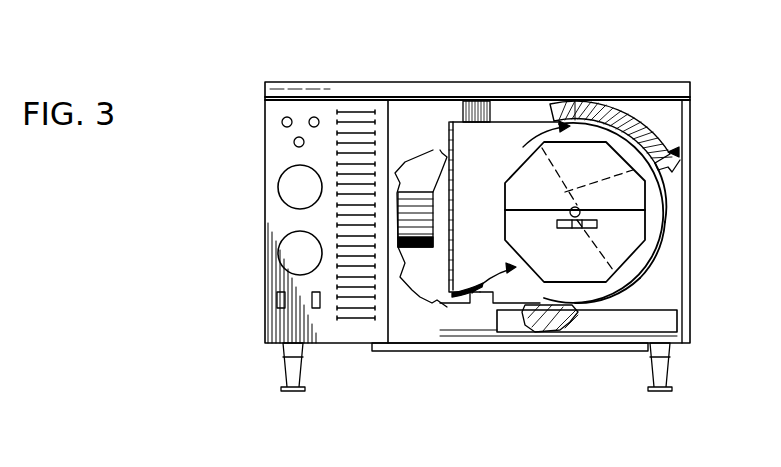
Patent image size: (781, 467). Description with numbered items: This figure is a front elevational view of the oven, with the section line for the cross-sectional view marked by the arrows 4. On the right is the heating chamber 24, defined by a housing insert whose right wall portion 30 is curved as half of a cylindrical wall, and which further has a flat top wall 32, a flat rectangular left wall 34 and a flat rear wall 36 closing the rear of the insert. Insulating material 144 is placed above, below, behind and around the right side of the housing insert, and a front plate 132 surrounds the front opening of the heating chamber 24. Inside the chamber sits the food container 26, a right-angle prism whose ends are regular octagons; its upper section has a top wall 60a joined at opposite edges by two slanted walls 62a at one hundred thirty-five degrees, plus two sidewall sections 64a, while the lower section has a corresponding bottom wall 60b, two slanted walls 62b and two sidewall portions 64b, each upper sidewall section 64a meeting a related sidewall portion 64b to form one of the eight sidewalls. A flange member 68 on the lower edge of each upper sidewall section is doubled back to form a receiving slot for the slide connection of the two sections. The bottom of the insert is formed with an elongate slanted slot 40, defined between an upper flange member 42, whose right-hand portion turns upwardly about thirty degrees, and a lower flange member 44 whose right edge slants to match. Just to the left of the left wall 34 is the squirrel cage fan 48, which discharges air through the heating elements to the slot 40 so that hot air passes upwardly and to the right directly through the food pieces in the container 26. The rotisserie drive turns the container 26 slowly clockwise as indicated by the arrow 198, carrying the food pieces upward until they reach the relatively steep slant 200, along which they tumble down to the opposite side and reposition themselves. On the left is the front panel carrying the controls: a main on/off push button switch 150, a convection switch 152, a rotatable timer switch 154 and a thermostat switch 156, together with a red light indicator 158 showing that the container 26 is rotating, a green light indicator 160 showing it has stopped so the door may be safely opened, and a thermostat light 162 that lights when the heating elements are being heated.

The section line 4- 4 is at (577, 58).
The heating chamber 24 is at (640, 258).
The food container 26 is at (664, 186).
The right wall portion 30 is at (665, 220).
The flat top wall 32 is at (493, 114).
The left wall 34 is at (440, 150).
The flat rear wall 36 is at (517, 112).
The slanted slot 40 is at (499, 312).
The upper flange member 42 is at (466, 287).
The lower flange member 44 is at (470, 322).
The squirrel cage fan 48 is at (442, 160).
The top wall 60a is at (600, 112).
The bottom wall 60b is at (582, 333).
The slanted walls 62a is at (660, 150).
The slanted walls 62b is at (650, 303).
The sidewall sections 64a is at (663, 198).
The sidewall portions 64b is at (648, 228).
The flange member 68 is at (505, 209).
The front plate 132 is at (668, 280).
The insulating material 144 is at (580, 110).
The main on/off push button switch 150 is at (277, 298).
The convection switch 152 is at (312, 299).
The timer switch 154 is at (284, 255).
The thermostat switch 156 is at (286, 188).
The red light indicator 158 is at (282, 120).
The green light indicator 160 is at (311, 117).
The thermostat light 162 is at (294, 143).
The arrow 198 is at (535, 118).
The slanted surface 200 is at (675, 152).